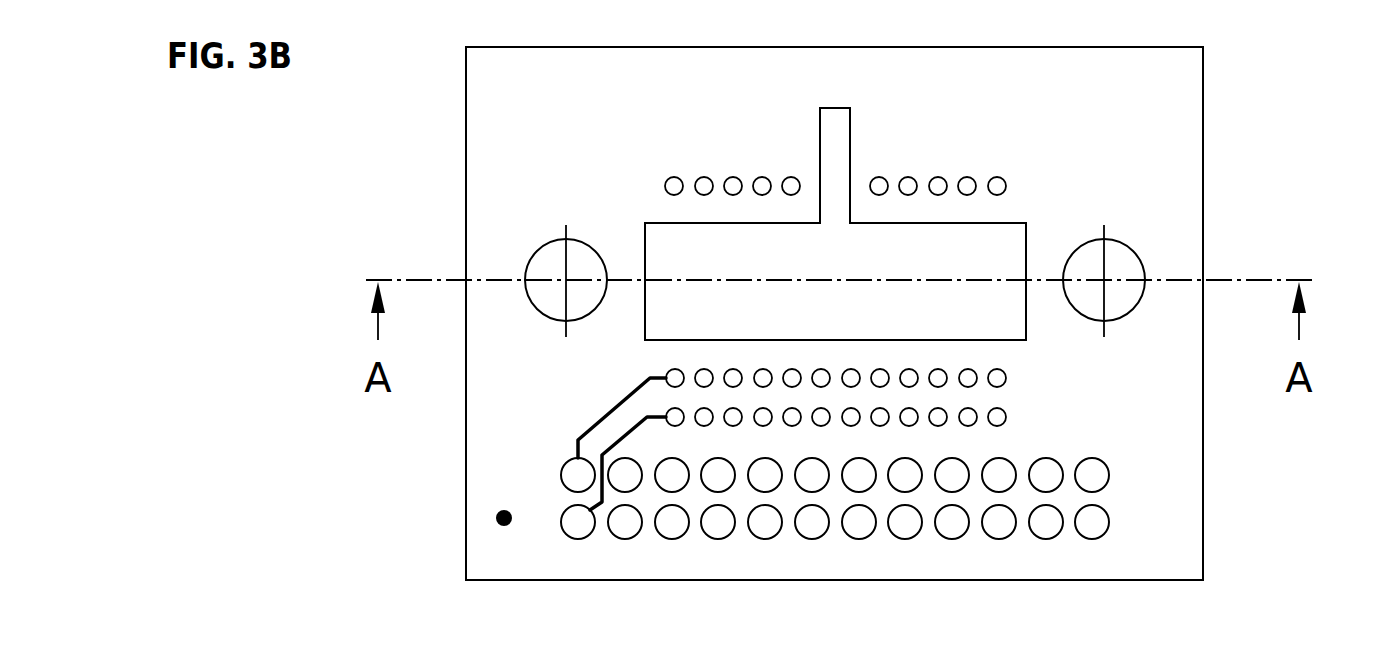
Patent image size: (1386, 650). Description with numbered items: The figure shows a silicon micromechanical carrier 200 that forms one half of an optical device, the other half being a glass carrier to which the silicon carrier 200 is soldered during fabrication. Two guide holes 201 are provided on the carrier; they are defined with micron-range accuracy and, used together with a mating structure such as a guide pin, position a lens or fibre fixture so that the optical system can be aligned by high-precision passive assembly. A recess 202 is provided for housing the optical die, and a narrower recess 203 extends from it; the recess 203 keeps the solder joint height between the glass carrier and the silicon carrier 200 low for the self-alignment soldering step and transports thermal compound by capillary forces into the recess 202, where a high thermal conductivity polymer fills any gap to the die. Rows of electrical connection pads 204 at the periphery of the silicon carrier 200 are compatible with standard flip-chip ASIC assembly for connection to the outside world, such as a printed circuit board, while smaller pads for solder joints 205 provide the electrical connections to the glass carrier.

The silicon micromechanical carrier 200 is at (504, 518).
The guide holes 201 is at (551, 265).
The recess 202 is at (667, 318).
The recess 203 is at (835, 123).
The electrical connection pads 204 is at (1092, 475).
The pads for solder joints 205 is at (999, 184).